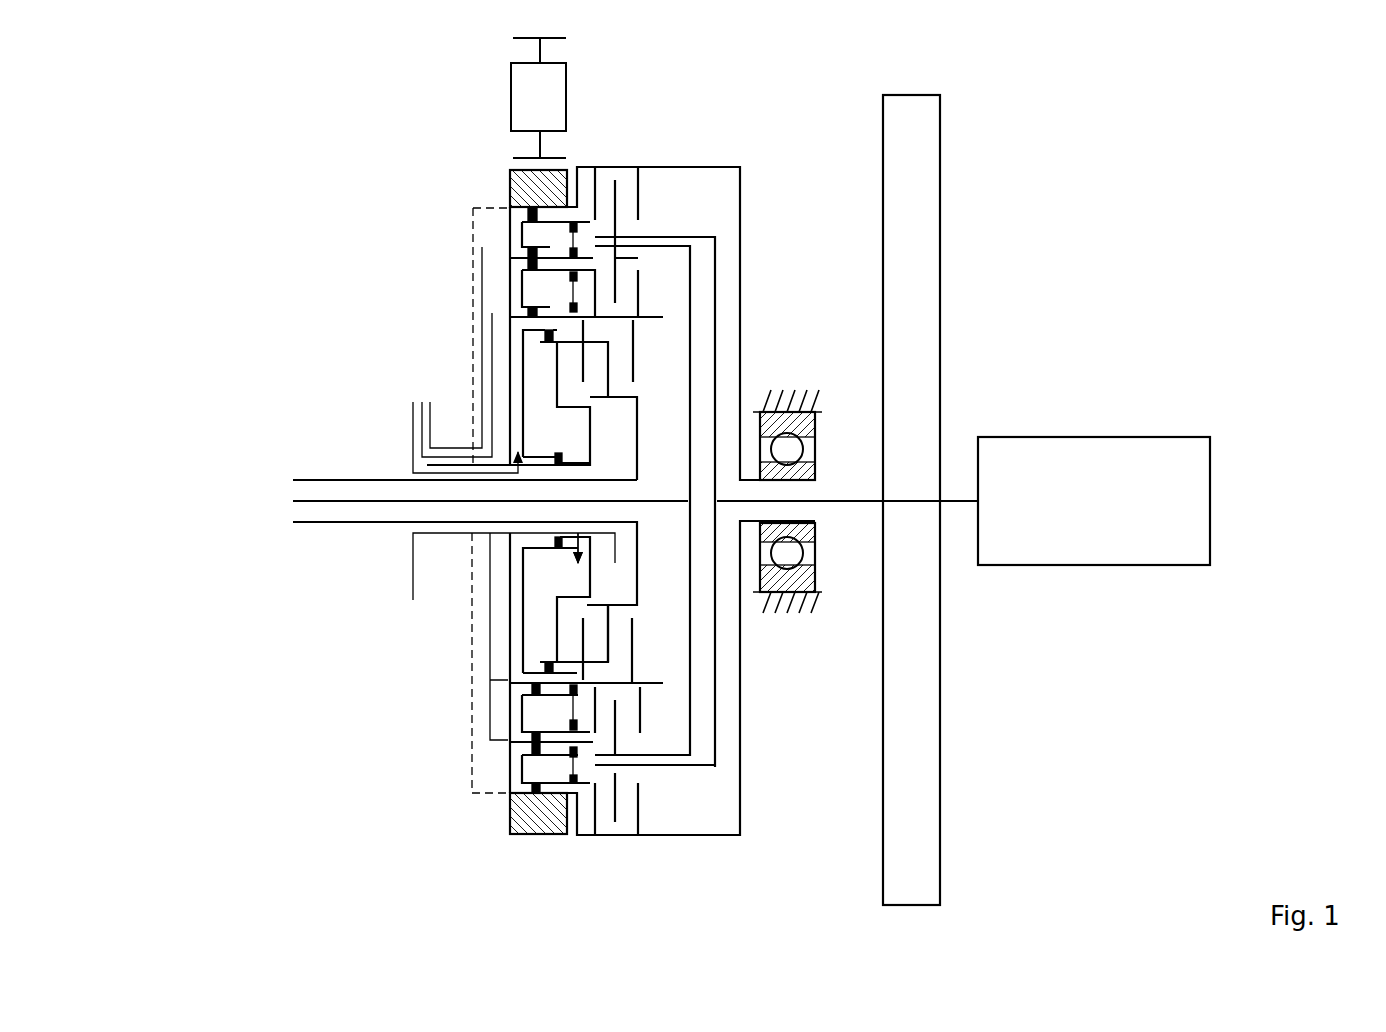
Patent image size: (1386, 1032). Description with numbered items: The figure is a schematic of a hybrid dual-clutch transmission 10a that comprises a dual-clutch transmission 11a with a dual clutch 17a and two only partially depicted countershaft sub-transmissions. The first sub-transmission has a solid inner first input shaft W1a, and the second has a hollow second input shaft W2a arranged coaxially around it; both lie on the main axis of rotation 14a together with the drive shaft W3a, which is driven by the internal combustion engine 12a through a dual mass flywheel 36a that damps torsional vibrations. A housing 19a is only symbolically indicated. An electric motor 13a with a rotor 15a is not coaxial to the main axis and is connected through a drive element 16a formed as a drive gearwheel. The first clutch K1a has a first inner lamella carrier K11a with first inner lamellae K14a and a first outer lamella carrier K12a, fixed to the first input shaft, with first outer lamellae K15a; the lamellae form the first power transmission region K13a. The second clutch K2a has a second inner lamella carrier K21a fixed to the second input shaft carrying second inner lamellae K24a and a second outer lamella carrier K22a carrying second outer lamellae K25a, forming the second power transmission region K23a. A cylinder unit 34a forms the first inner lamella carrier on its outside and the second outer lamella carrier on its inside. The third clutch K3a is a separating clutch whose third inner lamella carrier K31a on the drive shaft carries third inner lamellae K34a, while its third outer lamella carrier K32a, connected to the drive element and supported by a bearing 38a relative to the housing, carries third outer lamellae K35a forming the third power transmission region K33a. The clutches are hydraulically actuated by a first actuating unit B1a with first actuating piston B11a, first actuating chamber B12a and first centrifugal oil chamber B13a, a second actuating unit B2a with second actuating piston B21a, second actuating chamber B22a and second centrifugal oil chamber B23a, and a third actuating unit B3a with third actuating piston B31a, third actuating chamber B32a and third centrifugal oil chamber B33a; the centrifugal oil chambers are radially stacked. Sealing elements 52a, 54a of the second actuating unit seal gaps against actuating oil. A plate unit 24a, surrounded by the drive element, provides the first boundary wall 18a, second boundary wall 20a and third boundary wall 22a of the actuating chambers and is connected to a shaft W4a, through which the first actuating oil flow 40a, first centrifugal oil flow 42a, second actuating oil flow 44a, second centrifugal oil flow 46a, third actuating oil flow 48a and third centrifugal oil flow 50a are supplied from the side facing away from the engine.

The hybrid dual-clutch transmission 10a is at (651, 80).
The dual-clutch transmission 11a is at (278, 168).
The internal combustion engine 12a is at (1168, 488).
The electric motor 13a is at (577, 78).
The main axis of rotation 14a is at (300, 482).
The rotor 15a is at (522, 97).
The drive element 16a is at (517, 182).
The dual clutch 17a is at (303, 325).
The first boundary wall 18a is at (521, 247).
The housing 19a is at (778, 403).
The second boundary wall 20a is at (521, 313).
The third boundary wall 22a is at (510, 238).
The plate unit 24a is at (468, 708).
The cylinder unit 34a is at (1159, 698).
The dual mass flywheel 36a is at (912, 205).
The bearing 38a is at (825, 552).
The first actuating oil flow 40a is at (519, 387).
The first centrifugal oil flow 42a is at (490, 690).
The second actuating oil flow 44a is at (413, 420).
The second centrifugal oil flow 46a is at (519, 583).
The third actuating oil flow 48a is at (519, 282).
The third centrifugal oil flow 50a is at (540, 790).
The sealing element 52a is at (632, 333).
The sealing element 54a is at (590, 460).
The first actuating unit B1a is at (512, 262).
The second actuating unit B2a is at (512, 325).
The third actuating unit B3a is at (519, 224).
The first actuating piston B11a is at (540, 720).
The first actuating chamber B12a is at (508, 702).
The first centrifugal oil chamber B13a is at (508, 757).
The second actuating piston B21a is at (540, 720).
The second actuating chamber B22a is at (545, 605).
The second centrifugal oil chamber B23a is at (560, 700).
The third actuating piston B31a is at (522, 770).
The third actuating chamber B32a is at (530, 773).
The third centrifugal oil chamber B33a is at (560, 753).
The first clutch K1a is at (643, 282).
The second clutch K2a is at (637, 368).
The third clutch K3a is at (657, 220).
The first inner lamella carrier K11a is at (690, 732).
The first outer lamella carrier K12a is at (713, 755).
The first power transmission region K13a is at (633, 710).
The first inner lamellae K14a is at (641, 302).
The first outer lamellae K15a is at (617, 258).
The second inner lamella carrier K21a is at (617, 638).
The second outer lamella carrier K22a is at (1095, 698).
The second power transmission region K23a is at (652, 685).
The second inner lamellae K24a is at (610, 388).
The second outer lamellae K25a is at (633, 350).
The third inner lamella carrier K31a is at (740, 785).
The third outer lamella carrier K32a is at (740, 822).
The third power transmission region K33a is at (622, 820).
The third inner lamellae K34a is at (607, 195).
The third outer lamellae K35a is at (640, 193).
The first input shaft W1a is at (189, 474).
The second input shaft W2a is at (300, 512).
The drive shaft W3a is at (848, 500).
The shaft W4a is at (413, 535).